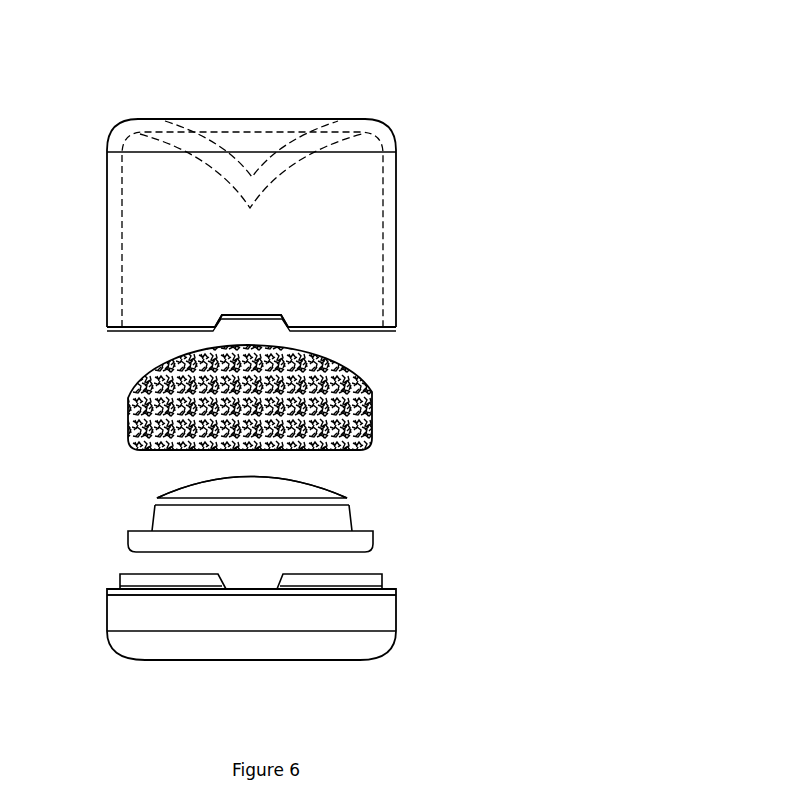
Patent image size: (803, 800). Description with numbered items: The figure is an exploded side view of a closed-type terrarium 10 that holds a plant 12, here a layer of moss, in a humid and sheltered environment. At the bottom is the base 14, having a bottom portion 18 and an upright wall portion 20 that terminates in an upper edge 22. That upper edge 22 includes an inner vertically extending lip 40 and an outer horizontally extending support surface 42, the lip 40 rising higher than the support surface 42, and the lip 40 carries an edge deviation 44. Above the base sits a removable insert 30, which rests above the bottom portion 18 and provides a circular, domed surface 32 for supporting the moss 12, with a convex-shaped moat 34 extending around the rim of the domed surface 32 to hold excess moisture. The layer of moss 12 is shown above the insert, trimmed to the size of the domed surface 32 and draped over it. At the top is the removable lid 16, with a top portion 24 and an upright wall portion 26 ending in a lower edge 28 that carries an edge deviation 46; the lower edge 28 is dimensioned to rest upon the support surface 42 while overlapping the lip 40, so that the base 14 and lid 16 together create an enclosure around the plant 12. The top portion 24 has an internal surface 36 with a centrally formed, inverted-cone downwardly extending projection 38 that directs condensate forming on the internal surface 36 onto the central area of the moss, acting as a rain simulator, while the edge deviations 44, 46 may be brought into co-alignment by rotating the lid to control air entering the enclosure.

The terrarium 10 is at (450, 115).
The plant 12 is at (125, 398).
The base 14 is at (108, 650).
The removable lid 16 is at (397, 216).
The bottom portion 18 is at (163, 664).
The upright wall portion 20 is at (390, 622).
The upper edge 22 is at (117, 580).
The top portion 24 is at (187, 118).
The upright wall portion 26 is at (386, 256).
The lower edge 28 is at (372, 333).
The removable insert 30 is at (358, 499).
The domed surface 32 is at (203, 486).
The moat 34 is at (126, 534).
The internal surface 36 is at (256, 130).
The downwardly extending projection 38 is at (285, 165).
The inner vertically extending lip 40 is at (370, 581).
The outer horizontally extending support surface 42 is at (400, 592).
The edge deviation 44 is at (258, 584).
The edge deviation 46 is at (251, 323).